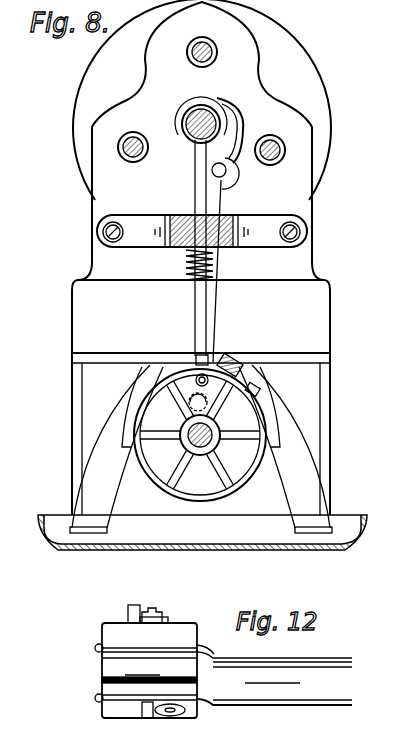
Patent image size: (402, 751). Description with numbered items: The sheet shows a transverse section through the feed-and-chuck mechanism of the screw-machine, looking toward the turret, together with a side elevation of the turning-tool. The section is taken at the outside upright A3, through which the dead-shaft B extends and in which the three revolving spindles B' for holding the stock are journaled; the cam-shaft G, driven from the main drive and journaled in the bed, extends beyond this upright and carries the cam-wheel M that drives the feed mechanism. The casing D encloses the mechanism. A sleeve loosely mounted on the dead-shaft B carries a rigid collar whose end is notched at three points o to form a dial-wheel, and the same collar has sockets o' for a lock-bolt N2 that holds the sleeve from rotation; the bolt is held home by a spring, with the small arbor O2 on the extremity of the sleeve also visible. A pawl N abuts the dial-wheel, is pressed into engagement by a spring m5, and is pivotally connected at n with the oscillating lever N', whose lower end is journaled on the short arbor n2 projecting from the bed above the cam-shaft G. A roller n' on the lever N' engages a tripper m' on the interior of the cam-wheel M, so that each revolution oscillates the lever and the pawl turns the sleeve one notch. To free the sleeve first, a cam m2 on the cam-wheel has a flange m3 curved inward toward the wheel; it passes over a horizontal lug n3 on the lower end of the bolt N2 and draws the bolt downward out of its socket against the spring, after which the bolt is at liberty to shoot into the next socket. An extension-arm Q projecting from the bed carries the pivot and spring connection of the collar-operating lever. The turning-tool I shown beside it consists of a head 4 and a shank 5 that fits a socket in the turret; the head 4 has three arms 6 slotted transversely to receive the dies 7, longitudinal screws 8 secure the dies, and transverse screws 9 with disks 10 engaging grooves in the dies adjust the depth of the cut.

In FIG. 8, the casing dome D is at (296, 45).
In FIG. 8, the upright A3 is at (97, 205).
In FIG. 8, the revolving spindles B' is at (203, 97).
In FIG. 8, the dead-shaft B is at (202, 108).
In FIG. 8, the notches o is at (190, 117).
In FIG. 8, the sockets o' is at (167, 91).
In FIG. 8, the pawl N is at (239, 130).
In FIG. 8, the pivot n is at (201, 179).
In FIG. 8, the pawl arc m5 is at (235, 178).
In FIG. 8, the lock-bolt N2 is at (195, 297).
In FIG. 8, the oscillating lever N' is at (235, 271).
In FIG. 8, the extension-arm Q is at (240, 218).
In FIG. 8, the arbor O2 is at (186, 268).
In FIG. 8, the roller n' is at (184, 358).
In FIG. 8, the lug n3 is at (212, 355).
In FIG. 8, the cam m2 is at (232, 360).
In FIG. 8, the flange m3 is at (252, 366).
In FIG. 8, the tripper m' is at (283, 379).
In FIG. 8, the arbor n2 is at (189, 402).
In FIG. 8, the cam-wheel M is at (247, 478).
In FIG. 8, the cam-shaft G is at (190, 441).
In FIG. 12, the tool body I is at (100, 668).
In FIG. 12, the arms 6 is at (103, 634).
In FIG. 12, the shank 5 is at (296, 706).
In FIG. 12, the head 4 is at (200, 653).
In FIG. 12, the dies 7 is at (130, 614).
In FIG. 12, the transverse screws 9 is at (156, 610).
In FIG. 12, the disks 10 is at (166, 619).
In FIG. 12, the screws 8 is at (95, 648).